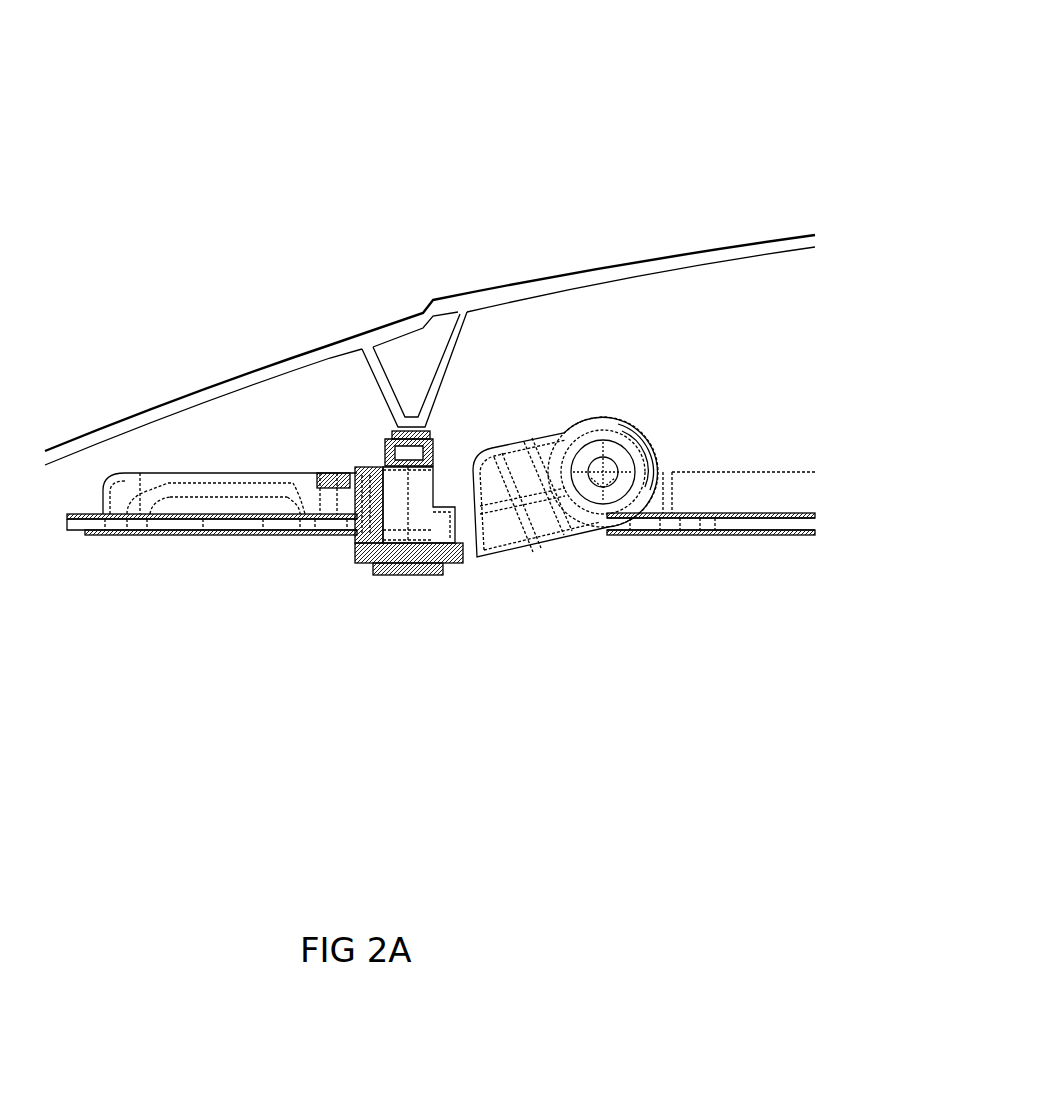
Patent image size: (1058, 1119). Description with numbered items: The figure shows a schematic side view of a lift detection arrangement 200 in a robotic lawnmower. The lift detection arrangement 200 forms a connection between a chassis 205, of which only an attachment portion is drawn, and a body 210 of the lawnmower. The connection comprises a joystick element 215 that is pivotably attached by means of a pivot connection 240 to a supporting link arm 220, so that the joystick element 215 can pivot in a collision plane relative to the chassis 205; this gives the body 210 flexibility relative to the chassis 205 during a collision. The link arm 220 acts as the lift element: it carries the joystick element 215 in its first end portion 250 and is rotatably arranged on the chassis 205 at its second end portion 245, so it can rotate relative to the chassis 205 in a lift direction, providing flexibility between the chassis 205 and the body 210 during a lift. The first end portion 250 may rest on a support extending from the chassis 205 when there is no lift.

The lift detection arrangement 200 is at (228, 108).
The chassis 205 is at (678, 470).
The body 210 is at (547, 282).
The joystick element 215 is at (392, 515).
The link arm 220 is at (518, 543).
The pivot connection 240 is at (408, 543).
The second end portion 245 is at (607, 470).
The first end portion 250 is at (440, 555).